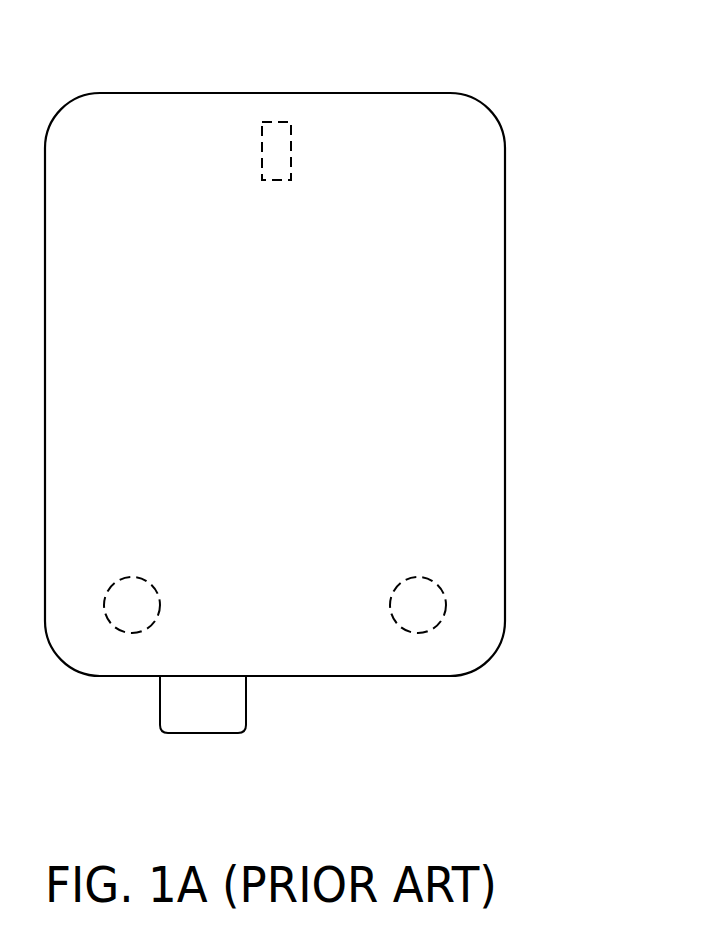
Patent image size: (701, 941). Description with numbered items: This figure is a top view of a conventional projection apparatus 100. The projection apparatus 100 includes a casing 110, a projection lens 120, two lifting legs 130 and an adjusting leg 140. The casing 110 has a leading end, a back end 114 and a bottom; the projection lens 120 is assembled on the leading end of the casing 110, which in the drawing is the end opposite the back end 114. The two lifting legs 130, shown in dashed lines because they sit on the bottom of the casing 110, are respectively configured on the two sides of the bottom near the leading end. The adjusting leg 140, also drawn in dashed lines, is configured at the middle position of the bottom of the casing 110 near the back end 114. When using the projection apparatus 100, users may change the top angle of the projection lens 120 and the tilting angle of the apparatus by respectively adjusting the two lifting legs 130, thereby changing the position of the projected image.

The projection apparatus 100 is at (577, 846).
The casing 110 is at (505, 358).
The back end 114 is at (349, 90).
The projection lens 120 is at (202, 735).
The lifting legs 130 is at (130, 633).
The adjusting leg 140 is at (275, 119).